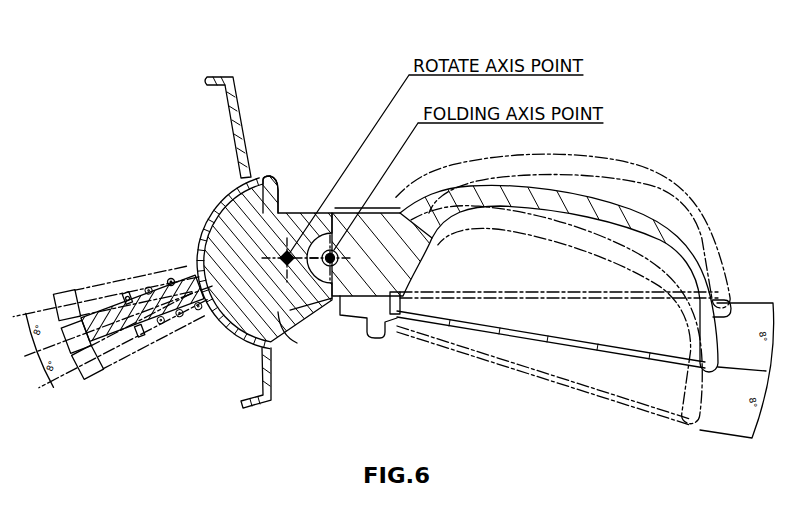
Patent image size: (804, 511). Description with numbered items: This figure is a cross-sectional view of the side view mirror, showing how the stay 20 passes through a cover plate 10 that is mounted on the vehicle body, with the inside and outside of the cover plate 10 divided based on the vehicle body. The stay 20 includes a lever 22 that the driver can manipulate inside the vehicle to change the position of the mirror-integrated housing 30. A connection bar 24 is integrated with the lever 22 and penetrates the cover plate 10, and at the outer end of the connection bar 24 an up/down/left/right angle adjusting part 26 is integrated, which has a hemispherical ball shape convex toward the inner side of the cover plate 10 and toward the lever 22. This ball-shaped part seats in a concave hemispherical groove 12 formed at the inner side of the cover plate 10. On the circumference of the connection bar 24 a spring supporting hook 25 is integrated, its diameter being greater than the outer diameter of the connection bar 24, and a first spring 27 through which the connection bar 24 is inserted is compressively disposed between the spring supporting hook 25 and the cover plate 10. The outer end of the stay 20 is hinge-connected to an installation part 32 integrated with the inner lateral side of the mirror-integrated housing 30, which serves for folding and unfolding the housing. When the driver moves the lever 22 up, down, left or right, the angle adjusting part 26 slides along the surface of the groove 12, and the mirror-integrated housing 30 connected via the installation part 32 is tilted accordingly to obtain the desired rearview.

The cover plate 10 is at (233, 80).
The concave hemispherical groove 12 is at (214, 208).
The stay 20 is at (99, 295).
The lever 22 is at (86, 352).
The connection bar 24 is at (129, 338).
The spring supporting hook 25 is at (126, 292).
The up/down/left/right angle adjusting part 26 is at (277, 185).
The first spring 27 is at (170, 279).
The mirror-integrated housing 30 is at (666, 218).
The installation part 32 is at (358, 280).